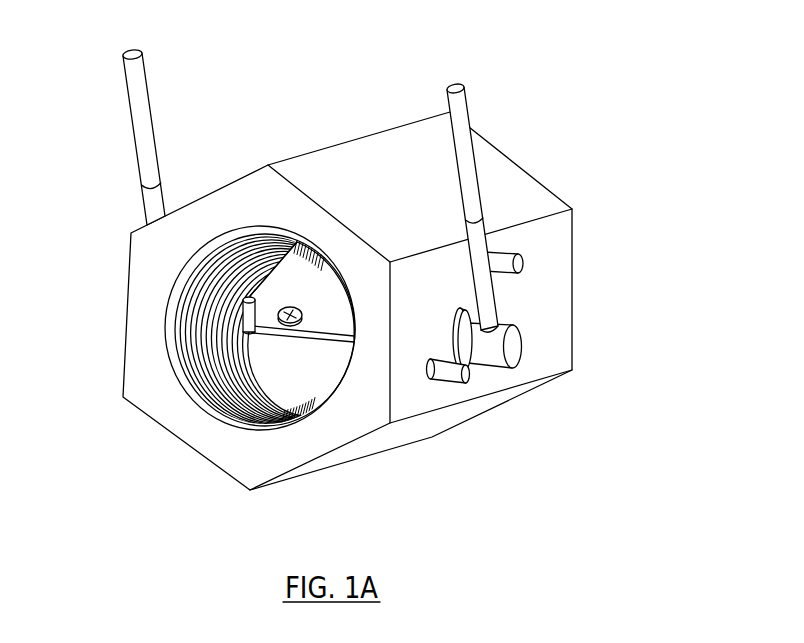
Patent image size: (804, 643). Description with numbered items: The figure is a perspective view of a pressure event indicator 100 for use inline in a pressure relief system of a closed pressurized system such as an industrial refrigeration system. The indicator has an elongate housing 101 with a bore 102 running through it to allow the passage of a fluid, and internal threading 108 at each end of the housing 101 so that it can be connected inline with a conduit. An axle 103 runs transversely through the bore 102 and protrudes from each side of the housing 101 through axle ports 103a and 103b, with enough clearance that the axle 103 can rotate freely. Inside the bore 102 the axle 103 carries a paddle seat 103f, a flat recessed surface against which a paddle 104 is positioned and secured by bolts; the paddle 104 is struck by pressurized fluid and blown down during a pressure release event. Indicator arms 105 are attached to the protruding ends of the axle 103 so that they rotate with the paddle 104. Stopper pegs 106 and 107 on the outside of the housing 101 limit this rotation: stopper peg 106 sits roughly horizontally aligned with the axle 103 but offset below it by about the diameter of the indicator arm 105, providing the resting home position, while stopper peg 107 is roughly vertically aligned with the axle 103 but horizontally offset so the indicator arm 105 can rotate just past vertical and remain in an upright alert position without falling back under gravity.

The pressure event indicator 100 is at (370, 272).
The housing 101 is at (273, 467).
The bore 102 is at (300, 379).
The axle 103 is at (510, 363).
The axle port 103a is at (472, 323).
The axle port 103b is at (253, 295).
The paddle seat 103f is at (250, 317).
The paddle 104 is at (317, 318).
The indicator arm 105 is at (133, 85).
The stopper peg 106 is at (468, 383).
The stopper peg 107 is at (524, 248).
The internal threading 108 is at (222, 415).